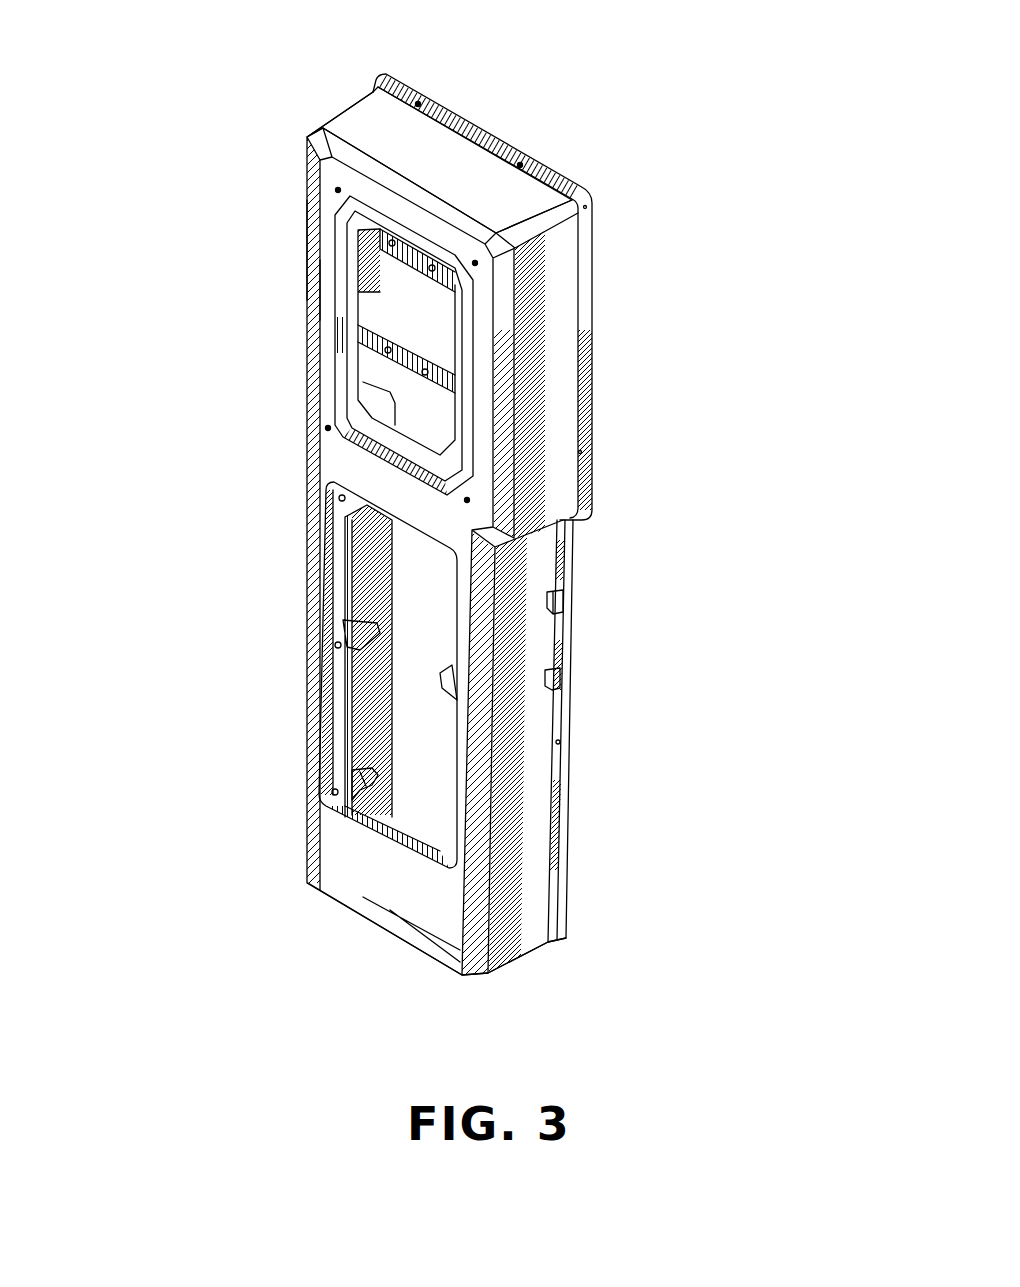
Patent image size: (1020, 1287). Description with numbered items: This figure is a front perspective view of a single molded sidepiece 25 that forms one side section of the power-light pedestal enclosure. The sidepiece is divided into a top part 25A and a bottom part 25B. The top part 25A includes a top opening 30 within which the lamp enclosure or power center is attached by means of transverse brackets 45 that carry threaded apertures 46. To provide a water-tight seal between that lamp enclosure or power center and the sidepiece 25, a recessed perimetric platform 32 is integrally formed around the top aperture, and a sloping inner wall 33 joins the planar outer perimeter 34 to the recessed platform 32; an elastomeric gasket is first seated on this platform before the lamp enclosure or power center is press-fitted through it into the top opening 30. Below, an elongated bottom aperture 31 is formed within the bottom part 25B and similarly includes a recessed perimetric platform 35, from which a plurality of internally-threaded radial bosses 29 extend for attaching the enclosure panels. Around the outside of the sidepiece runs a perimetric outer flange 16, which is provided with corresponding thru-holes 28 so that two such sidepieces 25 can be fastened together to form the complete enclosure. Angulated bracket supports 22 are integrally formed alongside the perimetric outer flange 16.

The perimetric outer flange 16 is at (592, 499).
The angulated bracket supports 22 is at (565, 601).
The molded sidepiece 25 is at (250, 1016).
The top part 25A is at (366, 104).
The bottom part 25B is at (525, 955).
The thru-holes 28 is at (579, 262).
The internally-threaded radial bosses 29 is at (352, 773).
The top opening 30 is at (406, 342).
The elongated bottom aperture 31 is at (438, 612).
The recessed perimetric platform 32 is at (362, 452).
The sloping inner wall 33 is at (332, 290).
The planar outer perimeter 34 is at (322, 231).
The recessed perimetric platform 35 is at (330, 557).
The transverse brackets 45 is at (386, 366).
The threaded apertures 46 is at (438, 262).